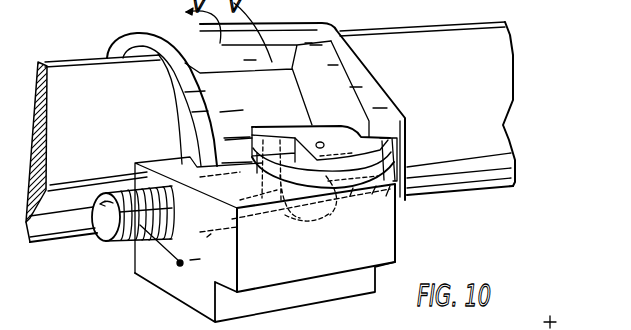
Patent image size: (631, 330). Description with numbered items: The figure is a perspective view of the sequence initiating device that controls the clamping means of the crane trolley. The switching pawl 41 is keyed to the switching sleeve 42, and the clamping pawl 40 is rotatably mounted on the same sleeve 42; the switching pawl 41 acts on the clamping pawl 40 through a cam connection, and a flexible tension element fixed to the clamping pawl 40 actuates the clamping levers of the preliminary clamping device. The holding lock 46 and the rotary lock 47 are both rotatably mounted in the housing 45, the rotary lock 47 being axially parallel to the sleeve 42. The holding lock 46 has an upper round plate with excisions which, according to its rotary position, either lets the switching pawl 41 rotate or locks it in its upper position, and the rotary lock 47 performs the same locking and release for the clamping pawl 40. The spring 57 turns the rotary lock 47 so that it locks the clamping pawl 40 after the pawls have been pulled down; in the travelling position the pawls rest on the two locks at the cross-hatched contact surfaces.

The clamping pawl 40 is at (158, 20).
The switching pawl 41 is at (317, 24).
The switching sleeve 42 is at (413, 33).
The housing 45 is at (380, 250).
The holding lock 46 is at (399, 159).
The rotary lock 47 is at (97, 240).
The spring 57 is at (124, 246).